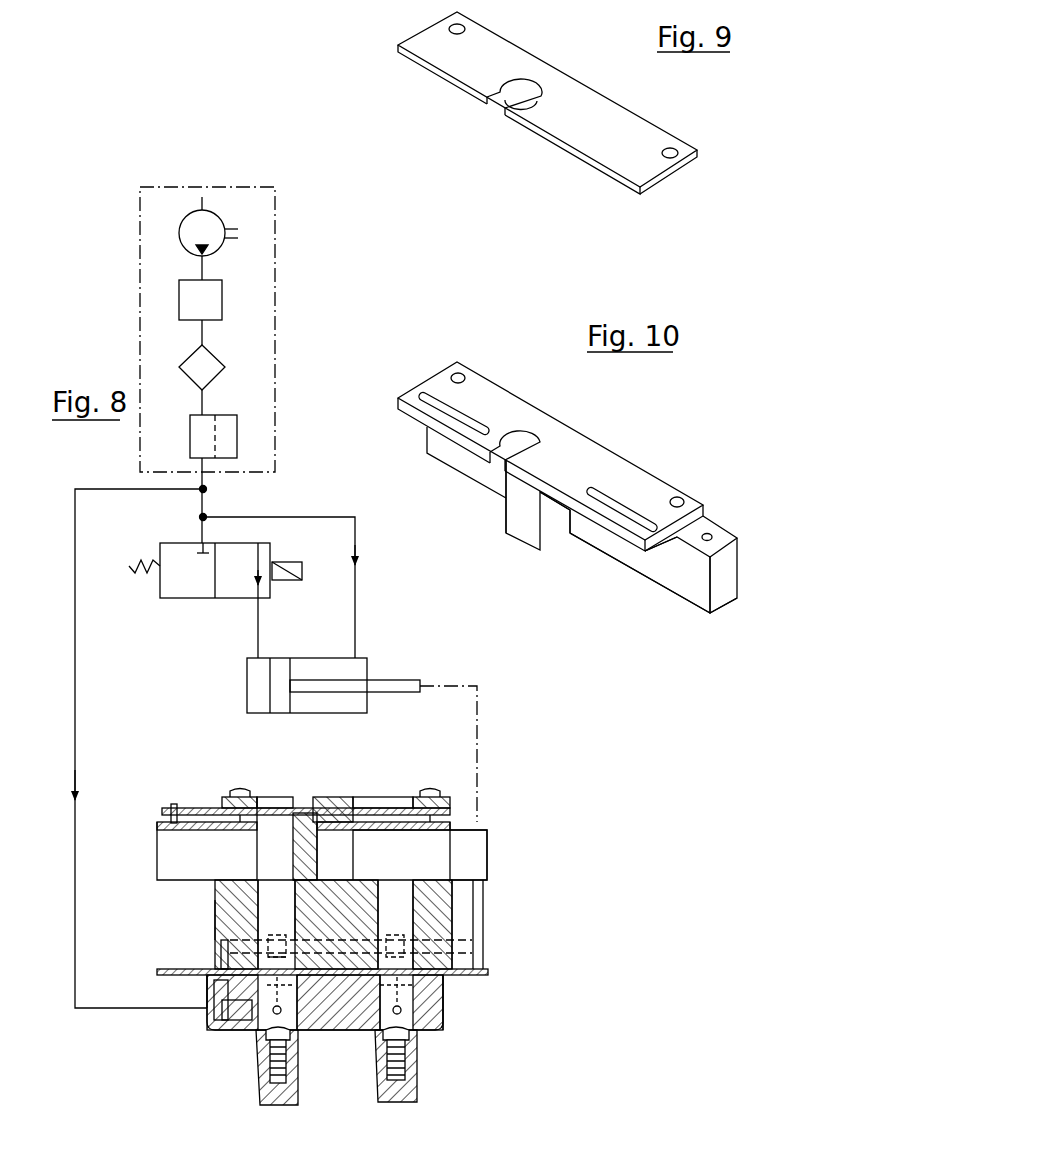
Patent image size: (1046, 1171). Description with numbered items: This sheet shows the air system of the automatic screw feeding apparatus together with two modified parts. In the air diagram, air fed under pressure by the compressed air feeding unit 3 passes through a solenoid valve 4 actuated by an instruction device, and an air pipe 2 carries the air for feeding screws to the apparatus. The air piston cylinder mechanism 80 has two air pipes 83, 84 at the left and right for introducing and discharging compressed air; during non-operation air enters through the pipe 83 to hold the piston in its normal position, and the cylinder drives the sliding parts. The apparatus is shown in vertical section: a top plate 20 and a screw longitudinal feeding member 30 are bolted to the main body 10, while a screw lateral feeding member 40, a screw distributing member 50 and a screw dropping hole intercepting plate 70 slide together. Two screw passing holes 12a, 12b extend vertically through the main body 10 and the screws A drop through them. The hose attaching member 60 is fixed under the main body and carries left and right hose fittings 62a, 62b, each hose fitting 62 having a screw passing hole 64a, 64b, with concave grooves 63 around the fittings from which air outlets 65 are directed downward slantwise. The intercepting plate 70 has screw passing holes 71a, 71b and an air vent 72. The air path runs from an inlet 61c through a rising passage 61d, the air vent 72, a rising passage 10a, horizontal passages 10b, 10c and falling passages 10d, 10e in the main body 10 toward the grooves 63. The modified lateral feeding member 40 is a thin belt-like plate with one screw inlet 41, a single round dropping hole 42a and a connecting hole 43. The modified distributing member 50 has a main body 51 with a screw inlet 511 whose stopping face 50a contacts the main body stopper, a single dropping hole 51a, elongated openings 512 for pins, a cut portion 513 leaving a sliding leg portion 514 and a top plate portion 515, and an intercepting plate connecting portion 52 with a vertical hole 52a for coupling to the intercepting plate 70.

In FIG. 8, the air pipe 2 is at (75, 650).
In FIG. 8, the compressed air feeding unit 3 is at (275, 302).
In FIG. 8, the solenoid valve 4 is at (163, 600).
In FIG. 8, the air piston cylinder mechanism 80 is at (246, 690).
In FIG. 8, the air pipe 83 is at (355, 627).
In FIG. 8, the air pipe 84 is at (258, 625).
In FIG. 9, the screw lateral feeding member 40 is at (418, 66).
In FIG. 8, the screw lateral feeding member 40 is at (200, 806).
In FIG. 9, the screw inlet 41 is at (490, 101).
In FIG. 9, the round dropping hole 42a is at (524, 72).
In FIG. 9, the connecting hole 43 is at (677, 144).
In FIG. 8, the top plate 20 is at (268, 796).
In FIG. 8, the screw longitudinal feeding member 30 is at (340, 806).
In FIG. 10, the screw distributing member 50 is at (480, 490).
In FIG. 8, the screw distributing member 50 is at (182, 853).
In FIG. 10, the stopping face 50a is at (543, 543).
In FIG. 10, the main body 51 is at (660, 474).
In FIG. 10, the dropping hole 51a is at (537, 433).
In FIG. 10, the screw inlet 511 is at (470, 470).
In FIG. 10, the elongated opening 512 is at (432, 400).
In FIG. 10, the cut portion 513 is at (610, 548).
In FIG. 10, the sliding leg portion 514 is at (673, 588).
In FIG. 10, the top plate portion 515 is at (662, 540).
In FIG. 8, the top plate portion 515 is at (451, 822).
In FIG. 10, the intercepting plate connecting portion 52 is at (737, 541).
In FIG. 8, the intercepting plate connecting portion 52 is at (481, 828).
In FIG. 10, the vertical hole 52a is at (710, 533).
In FIG. 8, the screw passing hole 12a is at (258, 880).
In FIG. 8, the screw passing hole 12b is at (403, 888).
In FIG. 8, the main body 10 is at (465, 898).
In FIG. 8, the rising passage 10a is at (223, 958).
In FIG. 8, the horizontal passage 10b is at (217, 940).
In FIG. 8, the horizontal passage 10c is at (298, 915).
In FIG. 8, the falling passage 10d is at (288, 958).
In FIG. 8, the falling passage 10e is at (457, 942).
In FIG. 8, the screw passing hole 71a is at (267, 937).
In FIG. 8, the screw passing hole 71b is at (388, 937).
In FIG. 8, the screw dropping hole intercepting plate 70 is at (160, 975).
In FIG. 8, the air vent 72 is at (182, 976).
In FIG. 8, the concave groove 63 is at (442, 997).
In FIG. 8, the hose attaching member 60 is at (495, 1044).
In FIG. 8, the inlet 61c is at (213, 1020).
In FIG. 8, the rising passage 61d is at (202, 1012).
In FIG. 8, the hose fitting 62a is at (258, 1012).
In FIG. 8, the hose fitting 62b is at (423, 1025).
In FIG. 8, the air outlet 65 is at (363, 1015).
In FIG. 8, the hose fitting 62 is at (300, 1085).
In FIG. 8, the screw passing hole 64a is at (267, 1097).
In FIG. 8, the screw passing hole 64b is at (407, 1093).
In FIG. 8, the screw A is at (287, 1057).